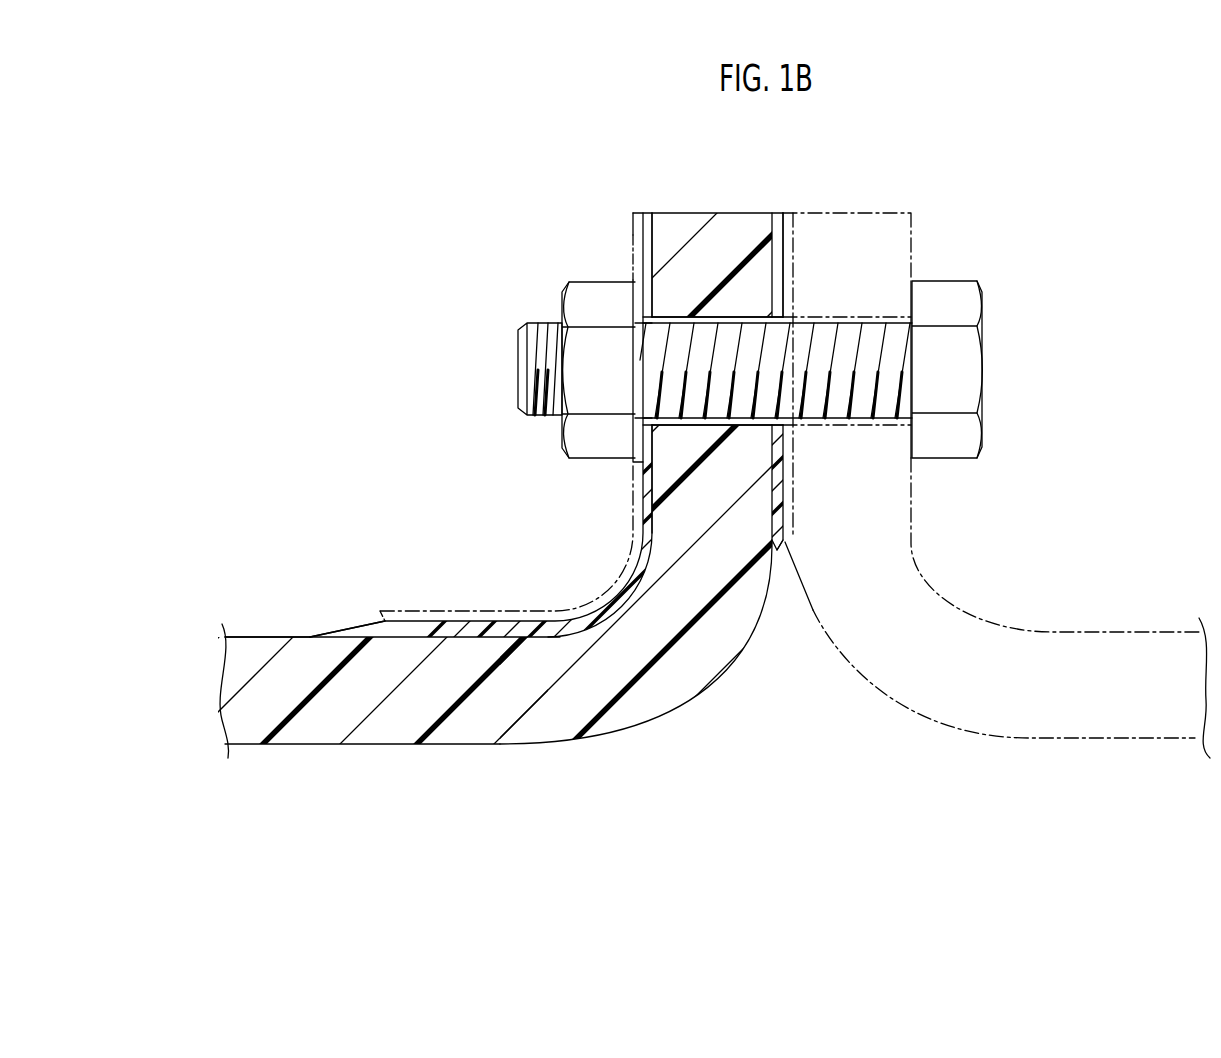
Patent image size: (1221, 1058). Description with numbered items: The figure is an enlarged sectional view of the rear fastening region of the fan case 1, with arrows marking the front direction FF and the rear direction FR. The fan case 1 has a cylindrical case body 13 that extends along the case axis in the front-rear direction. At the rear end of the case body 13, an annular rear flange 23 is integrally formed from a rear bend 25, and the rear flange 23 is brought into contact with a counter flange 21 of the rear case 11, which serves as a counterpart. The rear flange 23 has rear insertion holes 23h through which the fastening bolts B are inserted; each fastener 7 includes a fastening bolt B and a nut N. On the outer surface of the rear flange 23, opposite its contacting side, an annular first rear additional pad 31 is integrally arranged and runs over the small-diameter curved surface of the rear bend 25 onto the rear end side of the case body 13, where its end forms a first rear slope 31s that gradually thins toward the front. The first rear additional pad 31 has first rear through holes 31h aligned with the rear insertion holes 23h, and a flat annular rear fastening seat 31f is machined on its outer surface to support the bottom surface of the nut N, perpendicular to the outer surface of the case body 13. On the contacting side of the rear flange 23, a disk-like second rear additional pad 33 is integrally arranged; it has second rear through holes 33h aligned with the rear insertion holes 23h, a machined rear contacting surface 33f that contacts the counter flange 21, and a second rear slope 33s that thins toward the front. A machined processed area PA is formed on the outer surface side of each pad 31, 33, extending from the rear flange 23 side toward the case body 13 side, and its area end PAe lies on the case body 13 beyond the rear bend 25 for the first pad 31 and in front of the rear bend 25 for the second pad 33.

The fan case 1 is at (240, 634).
The case body 13 is at (296, 635).
The rear case 11 is at (1118, 630).
The counter flange 21 is at (873, 213).
The rear flange 23 is at (710, 214).
The rear insertion hole 23h is at (728, 425).
The rear bend 25 is at (678, 686).
The first rear additional pad 31 is at (618, 586).
The rear fastening seat 31f is at (638, 458).
The first rear through hole 31h is at (650, 408).
The first rear slope 31s is at (344, 624).
The second rear additional pad 33 is at (778, 213).
The rear contacting surface 33f is at (785, 255).
The second rear through hole 33h is at (790, 420).
The second rear slope 33s is at (776, 556).
The fastener 7 is at (560, 288).
The nut N is at (602, 288).
The fastening bolt B is at (980, 364).
The processed area PA is at (797, 296).
The area end PAe is at (789, 540).
The front direction FF is at (590, 802).
The rear direction FR is at (1090, 800).